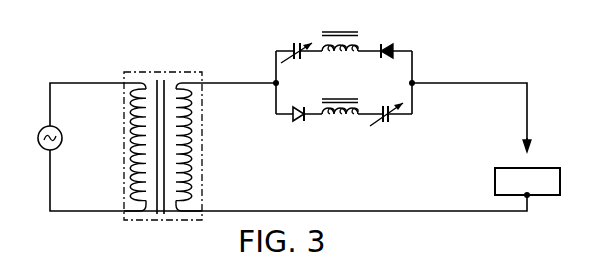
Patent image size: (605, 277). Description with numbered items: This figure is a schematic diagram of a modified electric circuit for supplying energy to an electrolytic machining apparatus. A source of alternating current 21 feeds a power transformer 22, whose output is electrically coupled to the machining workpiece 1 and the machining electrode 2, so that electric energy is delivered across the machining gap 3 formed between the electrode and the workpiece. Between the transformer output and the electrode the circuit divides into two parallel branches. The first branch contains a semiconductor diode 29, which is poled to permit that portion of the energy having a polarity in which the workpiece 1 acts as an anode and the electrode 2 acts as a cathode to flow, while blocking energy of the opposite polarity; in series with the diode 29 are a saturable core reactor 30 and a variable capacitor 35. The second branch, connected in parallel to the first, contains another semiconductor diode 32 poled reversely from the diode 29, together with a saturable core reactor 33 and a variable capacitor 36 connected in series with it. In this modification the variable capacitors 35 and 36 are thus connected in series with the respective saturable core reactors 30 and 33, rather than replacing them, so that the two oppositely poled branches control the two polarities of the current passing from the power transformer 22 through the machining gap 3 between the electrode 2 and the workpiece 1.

The machining workpiece 1 is at (560, 182).
The machining electrode 2 is at (524, 141).
The machining gap 3 is at (528, 161).
The source of alternating current 21 is at (39, 141).
The power transformer 22 is at (183, 66).
The semiconductor diode 29 is at (387, 46).
The saturable core reactor 30 is at (352, 55).
The semiconductor diode 32 is at (300, 120).
The saturable core reactor 33 is at (349, 120).
The variable capacitor 35 is at (290, 46).
The variable capacitor 36 is at (384, 124).